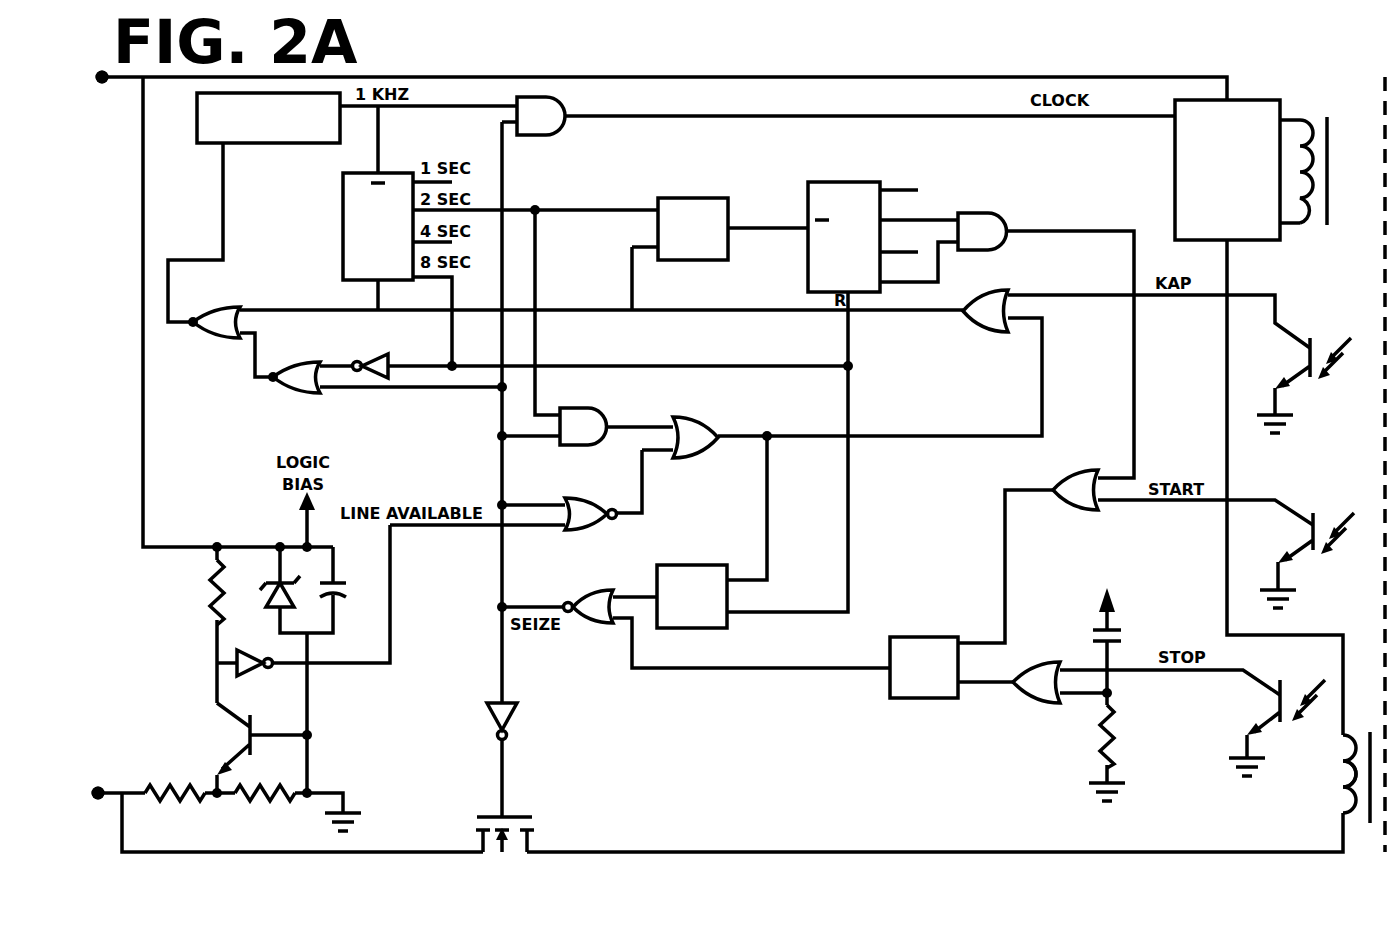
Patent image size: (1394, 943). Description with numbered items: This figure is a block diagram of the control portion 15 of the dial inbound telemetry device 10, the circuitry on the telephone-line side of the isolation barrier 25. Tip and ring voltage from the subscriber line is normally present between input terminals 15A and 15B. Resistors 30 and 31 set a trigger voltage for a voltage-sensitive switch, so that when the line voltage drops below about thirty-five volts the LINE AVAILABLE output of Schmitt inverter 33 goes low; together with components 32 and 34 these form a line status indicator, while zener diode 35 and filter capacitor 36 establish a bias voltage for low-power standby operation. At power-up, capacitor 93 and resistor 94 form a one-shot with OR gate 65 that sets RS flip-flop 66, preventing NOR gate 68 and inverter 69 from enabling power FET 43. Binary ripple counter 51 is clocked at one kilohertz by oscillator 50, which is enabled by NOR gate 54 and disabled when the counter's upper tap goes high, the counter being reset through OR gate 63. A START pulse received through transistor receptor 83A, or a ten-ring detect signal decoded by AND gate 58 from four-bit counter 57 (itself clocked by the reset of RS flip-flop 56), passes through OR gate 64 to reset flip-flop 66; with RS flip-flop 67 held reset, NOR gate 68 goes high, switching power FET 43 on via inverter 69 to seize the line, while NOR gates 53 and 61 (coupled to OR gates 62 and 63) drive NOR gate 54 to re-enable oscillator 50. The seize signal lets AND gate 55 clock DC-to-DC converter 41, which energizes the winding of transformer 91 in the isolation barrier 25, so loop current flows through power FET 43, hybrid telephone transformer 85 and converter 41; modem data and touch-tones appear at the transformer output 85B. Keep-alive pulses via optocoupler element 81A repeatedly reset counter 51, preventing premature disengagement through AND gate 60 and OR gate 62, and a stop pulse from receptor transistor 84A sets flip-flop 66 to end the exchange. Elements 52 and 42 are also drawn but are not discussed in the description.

The input terminal 15A is at (103, 104).
The input terminal 15B is at (98, 770).
The control portion 15 is at (692, 57).
The inbound telemetry device 10 is at (1300, 59).
The oscillator 50 is at (197, 122).
The binary ripple counter 51 is at (343, 200).
The inverter 52 is at (380, 356).
The NOR gate 53 is at (313, 362).
The NOR gate 54 is at (228, 308).
The AND gate 55 is at (560, 130).
The RS flip-flop 56 is at (698, 198).
The four bit counter 57 is at (847, 182).
The AND gate 58 is at (988, 213).
The AND gate 60 is at (588, 408).
The NOR gate 61 is at (588, 498).
The OR gate 62 is at (698, 417).
The OR gate 63 is at (975, 332).
The OR gate 64 is at (1072, 470).
The OR gate 65 is at (1036, 703).
The RS flip-flop 66 is at (926, 637).
The RS flip-flop 67 is at (694, 565).
The NOR gate 68 is at (598, 590).
The inverter 69 is at (516, 720).
The power FET 43 is at (486, 815).
The DC-to-DC converter 41 is at (1175, 166).
The transformer 91 is at (1300, 118).
The isolation barrier 25 is at (1385, 148).
The optocoupler LED 81A is at (1303, 340).
The transistor receptor 83A is at (1308, 515).
The receptor transistor 84A is at (1273, 685).
The capacitor 93 is at (1118, 636).
The resistor 94 is at (1120, 722).
The hybrid telephone transformer 85 is at (1368, 765).
The transformer winding 42 is at (1333, 774).
The transformer output 85B is at (1343, 780).
The resistor 30 is at (190, 800).
The resistor 31 is at (285, 800).
The line status indicator component 32 is at (225, 718).
The Schmitt inverter 33 is at (258, 676).
The line status indicator component 34 is at (212, 583).
The zener diode 35 is at (272, 607).
The filter capacitor 36 is at (344, 583).